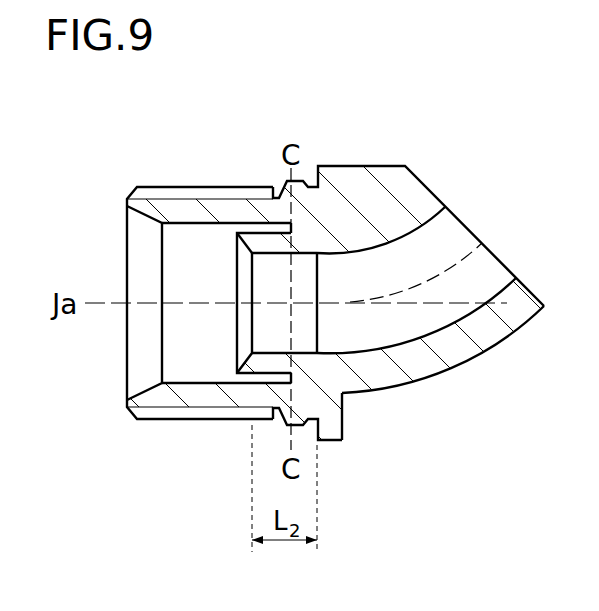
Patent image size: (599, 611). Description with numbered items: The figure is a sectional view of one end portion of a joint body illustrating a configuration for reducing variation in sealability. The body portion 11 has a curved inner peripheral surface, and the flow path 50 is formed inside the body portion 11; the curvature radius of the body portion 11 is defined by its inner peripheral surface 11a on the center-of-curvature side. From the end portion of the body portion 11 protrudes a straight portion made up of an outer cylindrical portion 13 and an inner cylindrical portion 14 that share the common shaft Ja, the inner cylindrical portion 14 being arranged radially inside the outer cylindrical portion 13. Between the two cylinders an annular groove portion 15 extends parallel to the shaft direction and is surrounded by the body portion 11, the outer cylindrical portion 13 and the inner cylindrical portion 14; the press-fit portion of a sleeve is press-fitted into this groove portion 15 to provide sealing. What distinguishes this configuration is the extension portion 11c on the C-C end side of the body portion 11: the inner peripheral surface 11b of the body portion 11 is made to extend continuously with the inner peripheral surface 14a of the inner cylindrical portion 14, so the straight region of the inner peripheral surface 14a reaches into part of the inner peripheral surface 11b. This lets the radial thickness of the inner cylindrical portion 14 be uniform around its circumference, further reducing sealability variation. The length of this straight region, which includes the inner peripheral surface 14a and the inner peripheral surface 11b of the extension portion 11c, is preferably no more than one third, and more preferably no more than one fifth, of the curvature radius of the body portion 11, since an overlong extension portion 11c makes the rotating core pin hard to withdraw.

The body portion 11 is at (396, 177).
The inner peripheral surface of the body portion on the center-of-curvature side 11a is at (413, 336).
The inner peripheral surface of the body portion 11b is at (308, 343).
The extension portion 11c is at (343, 394).
The outer cylindrical portion 13 is at (160, 402).
The inner cylindrical portion 14 is at (260, 363).
The inner peripheral surface of the inner cylindrical portion 14a is at (272, 343).
The groove portion 15 is at (224, 231).
The flow path 50 is at (436, 248).